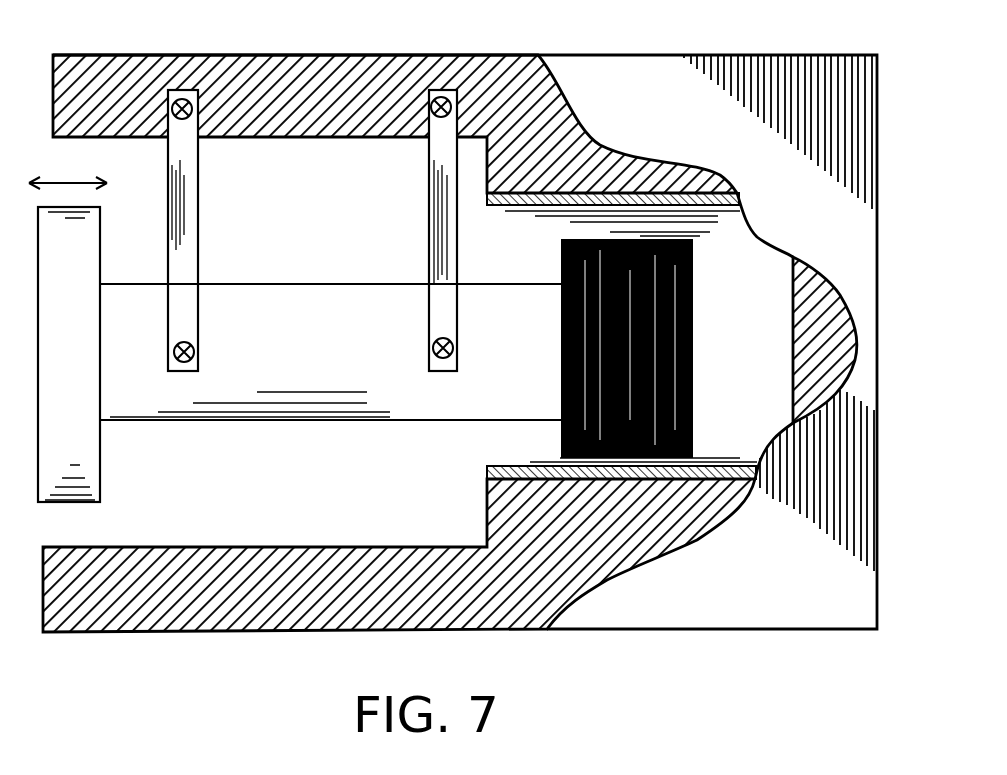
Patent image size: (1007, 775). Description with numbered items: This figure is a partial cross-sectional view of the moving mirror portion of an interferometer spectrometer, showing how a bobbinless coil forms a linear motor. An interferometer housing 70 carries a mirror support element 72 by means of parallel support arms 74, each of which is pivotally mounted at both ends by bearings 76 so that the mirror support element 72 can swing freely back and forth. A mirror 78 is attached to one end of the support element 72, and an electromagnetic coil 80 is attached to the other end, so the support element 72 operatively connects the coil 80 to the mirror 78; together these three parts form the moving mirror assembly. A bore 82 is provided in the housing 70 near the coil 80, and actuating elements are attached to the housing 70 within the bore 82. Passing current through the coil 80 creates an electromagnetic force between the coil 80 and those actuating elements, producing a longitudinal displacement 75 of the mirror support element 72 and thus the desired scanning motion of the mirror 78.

The interferometer housing 70 is at (300, 55).
The mirror support element 72 is at (363, 423).
The parallel support arms 74 is at (198, 190).
The longitudinal displacement 75 is at (68, 171).
The bearings 76 is at (175, 90).
The mirror 78 is at (102, 463).
The electromagnetic coil 80 is at (562, 262).
The bore 82 is at (755, 316).